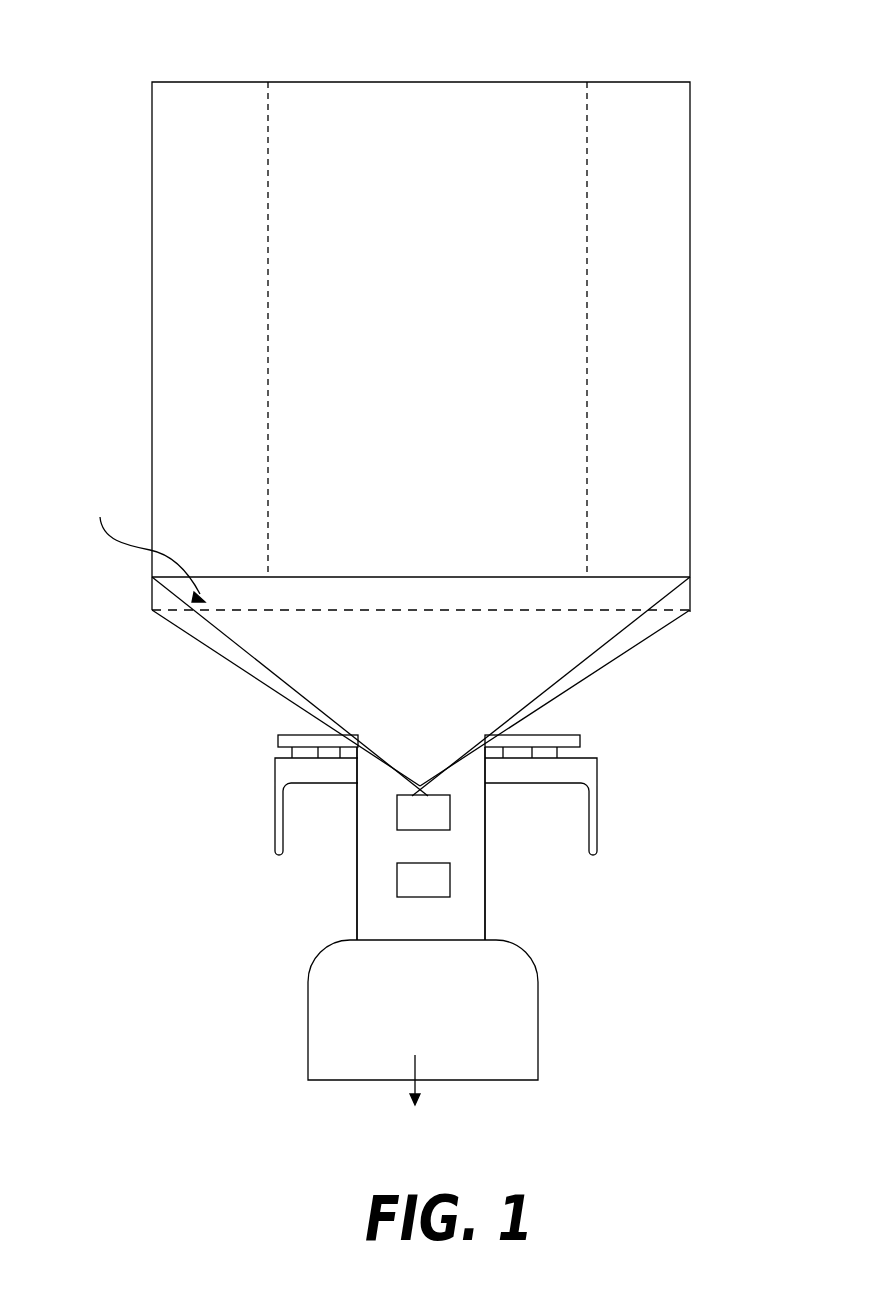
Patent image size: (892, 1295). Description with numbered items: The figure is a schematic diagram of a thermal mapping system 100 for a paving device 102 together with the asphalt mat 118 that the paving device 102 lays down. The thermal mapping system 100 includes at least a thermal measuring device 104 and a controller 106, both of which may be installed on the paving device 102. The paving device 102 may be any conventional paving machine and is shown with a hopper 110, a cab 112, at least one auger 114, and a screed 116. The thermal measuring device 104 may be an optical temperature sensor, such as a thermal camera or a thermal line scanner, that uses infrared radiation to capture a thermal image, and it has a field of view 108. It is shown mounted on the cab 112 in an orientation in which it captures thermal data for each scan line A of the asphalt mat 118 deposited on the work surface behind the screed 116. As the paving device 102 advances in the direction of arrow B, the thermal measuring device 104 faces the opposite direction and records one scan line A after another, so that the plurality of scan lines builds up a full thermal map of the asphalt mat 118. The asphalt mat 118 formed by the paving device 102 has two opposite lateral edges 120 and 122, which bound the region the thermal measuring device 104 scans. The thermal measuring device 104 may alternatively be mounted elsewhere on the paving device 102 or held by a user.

The thermal mapping system 100 is at (353, 867).
The paving device 102 is at (487, 921).
The thermal measuring device 104 is at (450, 810).
The controller 106 is at (450, 880).
The field of view 108 is at (680, 598).
The hopper 110 is at (522, 1023).
The cab 112 is at (378, 833).
The auger 114 is at (313, 758).
The screed 116 is at (275, 777).
The asphalt mat 118 is at (425, 82).
The lateral edge 120 is at (267, 105).
The lateral edge 122 is at (587, 105).